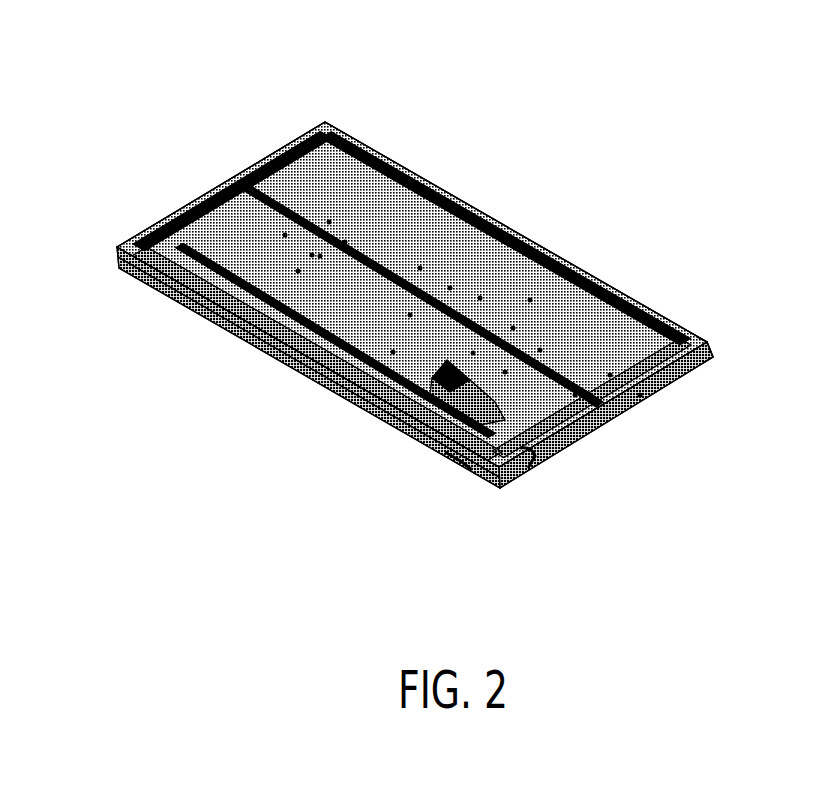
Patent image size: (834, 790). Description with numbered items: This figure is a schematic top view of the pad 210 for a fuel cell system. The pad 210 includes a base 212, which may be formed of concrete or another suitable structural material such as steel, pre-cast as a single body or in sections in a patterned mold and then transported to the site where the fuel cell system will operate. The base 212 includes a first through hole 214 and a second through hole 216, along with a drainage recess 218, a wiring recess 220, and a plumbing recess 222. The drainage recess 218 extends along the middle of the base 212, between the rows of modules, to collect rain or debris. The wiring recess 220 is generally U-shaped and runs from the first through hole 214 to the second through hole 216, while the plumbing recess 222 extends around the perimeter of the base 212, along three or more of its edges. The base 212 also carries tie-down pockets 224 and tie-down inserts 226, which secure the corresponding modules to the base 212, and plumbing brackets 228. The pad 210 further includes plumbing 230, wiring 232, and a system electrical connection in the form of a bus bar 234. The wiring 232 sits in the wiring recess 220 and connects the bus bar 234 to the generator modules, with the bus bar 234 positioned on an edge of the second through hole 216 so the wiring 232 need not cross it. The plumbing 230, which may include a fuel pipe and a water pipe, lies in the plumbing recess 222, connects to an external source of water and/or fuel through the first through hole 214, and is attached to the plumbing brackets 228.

The pad 210 is at (422, 294).
The base 212 is at (330, 202).
The first through hole 214 is at (650, 323).
The second through hole 216 is at (460, 458).
The drainage recess 218 is at (288, 212).
The wiring recess 220 is at (397, 182).
The plumbing recess 222 is at (708, 347).
The tie-down pockets 224 is at (563, 408).
The tie-down inserts 226 is at (528, 460).
The plumbing brackets 228 is at (312, 348).
The plumbing 230 is at (473, 207).
The wiring 232 is at (173, 248).
The bus bar 234 is at (428, 387).